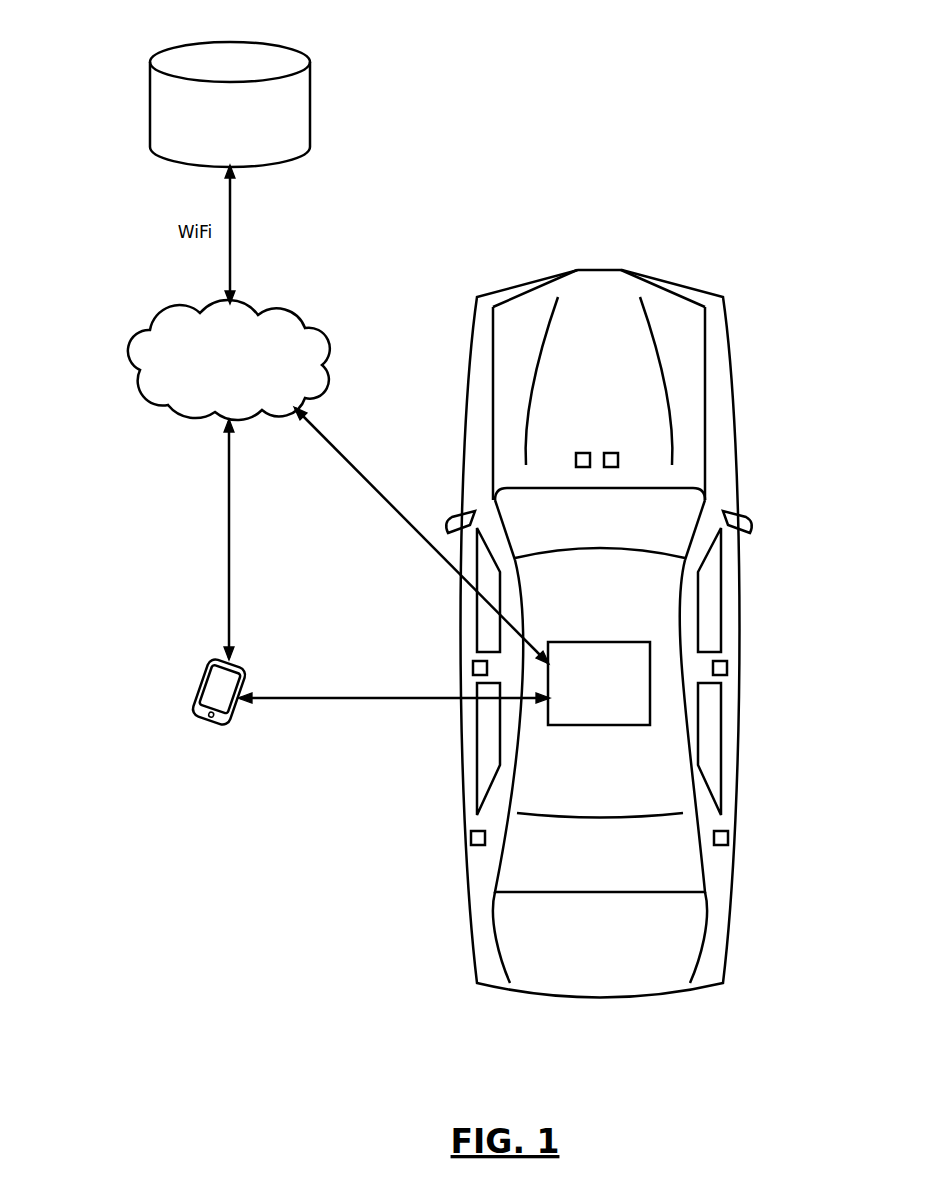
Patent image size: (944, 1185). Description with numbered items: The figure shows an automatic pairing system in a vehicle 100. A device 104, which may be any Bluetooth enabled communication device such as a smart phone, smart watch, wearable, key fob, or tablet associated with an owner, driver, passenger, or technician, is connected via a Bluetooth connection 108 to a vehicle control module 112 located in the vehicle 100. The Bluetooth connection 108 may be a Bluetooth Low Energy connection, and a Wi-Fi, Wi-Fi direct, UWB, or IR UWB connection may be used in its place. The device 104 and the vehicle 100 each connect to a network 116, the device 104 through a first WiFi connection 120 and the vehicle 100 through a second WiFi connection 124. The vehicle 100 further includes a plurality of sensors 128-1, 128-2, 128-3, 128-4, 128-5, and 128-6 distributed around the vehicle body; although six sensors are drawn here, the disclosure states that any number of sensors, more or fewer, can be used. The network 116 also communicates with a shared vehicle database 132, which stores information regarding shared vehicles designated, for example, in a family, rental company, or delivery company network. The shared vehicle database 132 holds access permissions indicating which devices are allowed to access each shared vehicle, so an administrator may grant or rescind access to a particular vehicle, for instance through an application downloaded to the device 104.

The vehicle 100 is at (625, 270).
The device 104 is at (203, 674).
The Bluetooth connection 108 is at (293, 698).
The vehicle control module 112 is at (593, 640).
The network 116 is at (163, 310).
The first WiFi connection 120 is at (228, 490).
The second WiFi connection 124 is at (340, 485).
The sensor 128-1 is at (577, 454).
The sensor 128-2 is at (617, 454).
The sensor 128-3 is at (473, 663).
The sensor 128-4 is at (728, 665).
The sensor 128-5 is at (471, 834).
The sensor 128-6 is at (729, 833).
The shared vehicle database 132 is at (148, 60).